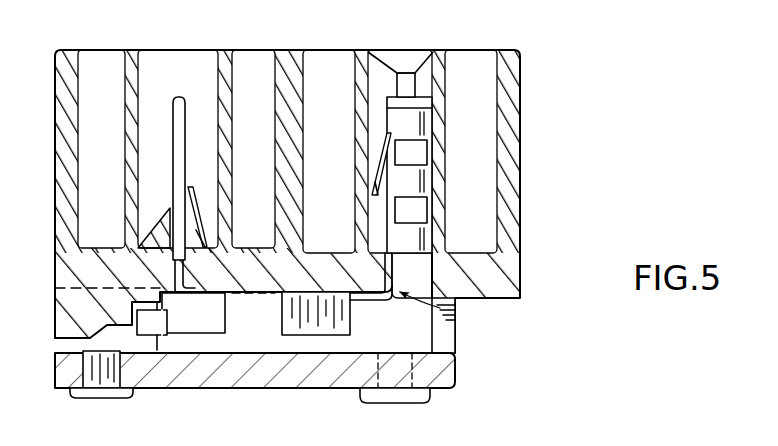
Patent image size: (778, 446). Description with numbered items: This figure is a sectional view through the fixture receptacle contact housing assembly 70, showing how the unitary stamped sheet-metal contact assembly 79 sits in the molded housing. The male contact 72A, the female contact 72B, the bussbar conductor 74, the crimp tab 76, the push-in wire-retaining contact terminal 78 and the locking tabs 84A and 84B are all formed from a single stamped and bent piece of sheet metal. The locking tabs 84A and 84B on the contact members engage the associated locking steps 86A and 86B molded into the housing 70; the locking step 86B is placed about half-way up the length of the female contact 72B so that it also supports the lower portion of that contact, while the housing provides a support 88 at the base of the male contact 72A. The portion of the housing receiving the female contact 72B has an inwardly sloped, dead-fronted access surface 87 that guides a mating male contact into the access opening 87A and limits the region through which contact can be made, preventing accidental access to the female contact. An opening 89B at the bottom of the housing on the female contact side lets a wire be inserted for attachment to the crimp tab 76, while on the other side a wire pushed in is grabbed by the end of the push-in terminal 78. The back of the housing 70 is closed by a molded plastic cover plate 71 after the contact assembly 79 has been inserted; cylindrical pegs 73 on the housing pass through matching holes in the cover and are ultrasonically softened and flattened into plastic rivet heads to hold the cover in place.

The housing 70 is at (507, 223).
The cover plate 71 is at (447, 375).
The male contact 72A is at (183, 122).
The female contact 72B is at (398, 120).
The cylindrical pegs 73 is at (98, 380).
The bussbar conductor 74 is at (238, 296).
The crimp tab 76 is at (355, 322).
The push-in wire-retaining contact terminal 78 is at (222, 330).
The contact assembly 79 is at (455, 310).
The locking tab 84A is at (193, 207).
The locking tab 84B is at (383, 167).
The locking step 86A is at (202, 245).
The locking step 86B is at (378, 194).
The access surface 87 is at (422, 58).
The access opening 87A is at (407, 72).
The support 88 is at (162, 223).
The opening 89B is at (437, 333).